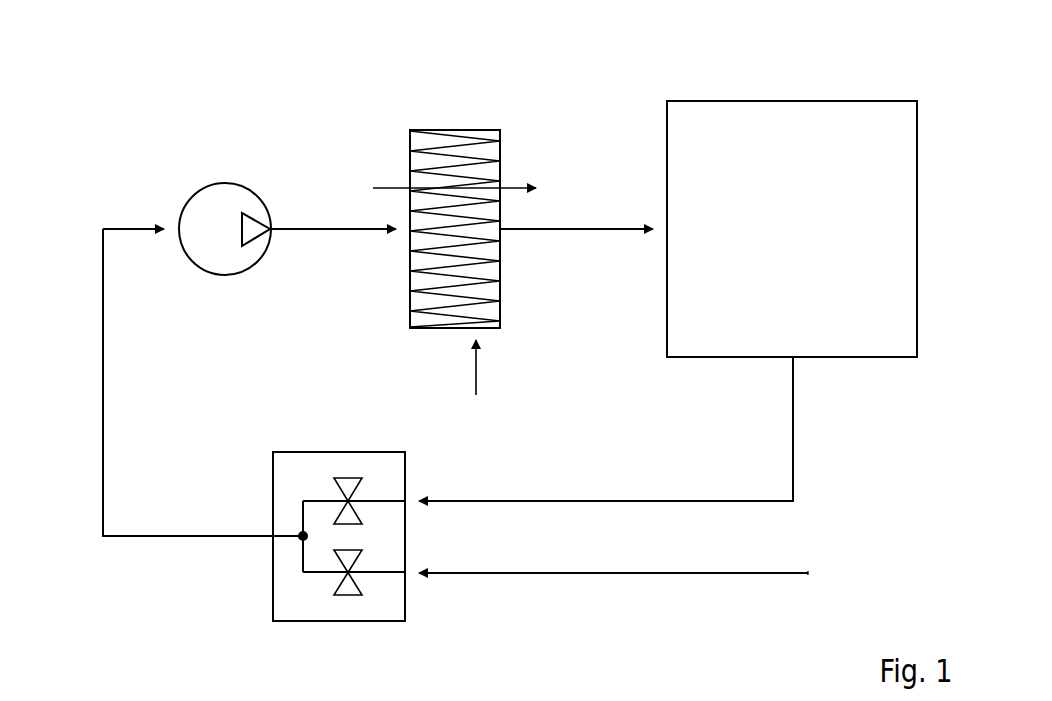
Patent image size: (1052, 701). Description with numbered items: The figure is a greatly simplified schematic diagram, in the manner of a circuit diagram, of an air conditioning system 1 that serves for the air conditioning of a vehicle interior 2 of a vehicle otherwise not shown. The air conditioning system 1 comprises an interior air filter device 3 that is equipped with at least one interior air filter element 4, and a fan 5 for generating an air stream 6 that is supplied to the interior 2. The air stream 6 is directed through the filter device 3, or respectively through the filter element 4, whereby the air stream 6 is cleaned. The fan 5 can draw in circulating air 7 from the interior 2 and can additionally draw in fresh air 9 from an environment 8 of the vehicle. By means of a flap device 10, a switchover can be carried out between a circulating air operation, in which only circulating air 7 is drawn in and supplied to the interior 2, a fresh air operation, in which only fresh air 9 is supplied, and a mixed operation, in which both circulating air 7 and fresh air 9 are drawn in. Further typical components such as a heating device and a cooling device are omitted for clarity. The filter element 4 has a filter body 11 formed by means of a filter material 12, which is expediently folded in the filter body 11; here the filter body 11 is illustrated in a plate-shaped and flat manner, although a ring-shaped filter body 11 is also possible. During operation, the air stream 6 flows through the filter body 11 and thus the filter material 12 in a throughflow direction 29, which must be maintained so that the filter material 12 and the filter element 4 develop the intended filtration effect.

The air conditioning system 1 is at (140, 122).
The vehicle interior 2 is at (784, 245).
The interior air filter device 3 is at (451, 117).
The interior air filter element 4 is at (500, 146).
The fan 5 is at (222, 183).
The air stream 6 is at (299, 228).
The circulating air 7 is at (567, 500).
The environment 8 is at (832, 585).
The fresh air 9 is at (571, 575).
The flap device 10 is at (338, 452).
The filter body 11 is at (473, 385).
The filter material 12 is at (475, 282).
The throughflow direction 29 is at (383, 188).